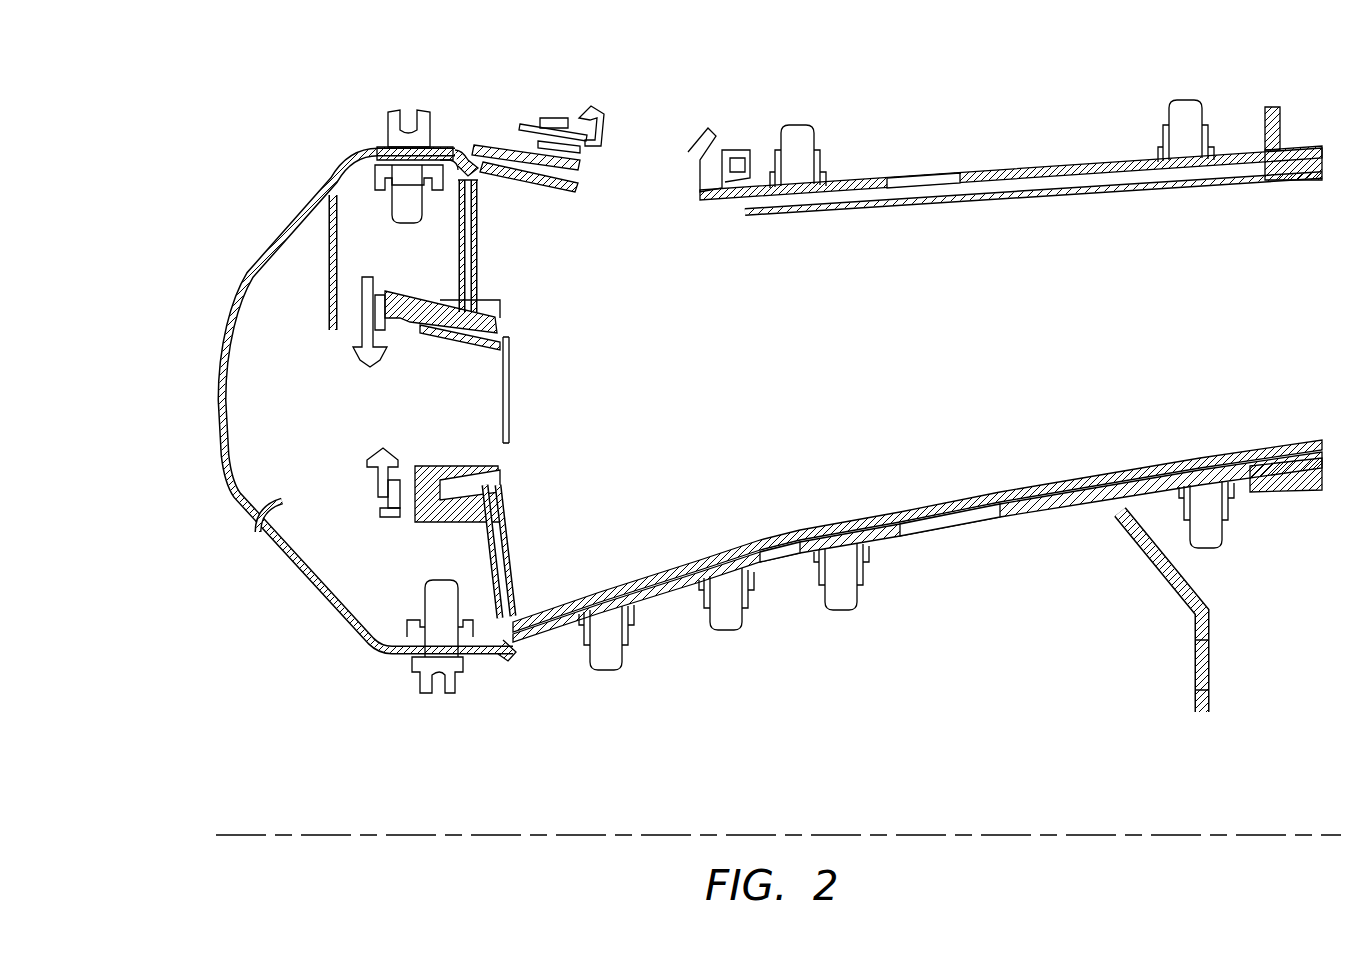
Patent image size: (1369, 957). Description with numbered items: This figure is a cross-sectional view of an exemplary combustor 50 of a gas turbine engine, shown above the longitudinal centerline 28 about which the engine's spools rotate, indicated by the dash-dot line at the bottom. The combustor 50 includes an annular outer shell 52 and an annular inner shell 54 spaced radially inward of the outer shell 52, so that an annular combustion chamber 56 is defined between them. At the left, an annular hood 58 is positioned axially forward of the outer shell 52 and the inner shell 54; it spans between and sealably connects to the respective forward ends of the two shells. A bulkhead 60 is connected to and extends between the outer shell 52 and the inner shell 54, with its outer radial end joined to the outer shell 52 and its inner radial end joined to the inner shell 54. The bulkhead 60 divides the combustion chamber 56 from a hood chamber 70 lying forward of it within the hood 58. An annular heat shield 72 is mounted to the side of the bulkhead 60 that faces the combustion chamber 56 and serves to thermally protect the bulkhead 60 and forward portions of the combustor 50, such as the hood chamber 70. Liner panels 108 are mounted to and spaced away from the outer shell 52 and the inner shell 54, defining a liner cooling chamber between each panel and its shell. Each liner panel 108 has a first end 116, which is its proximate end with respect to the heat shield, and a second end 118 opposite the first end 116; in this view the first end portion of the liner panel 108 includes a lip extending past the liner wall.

The longitudinal centerline 28 is at (1319, 833).
The combustor 50 is at (1005, 120).
The annular outer shell 52 is at (937, 176).
The annular inner shell 54 is at (968, 527).
The annular combustion chamber 56 is at (984, 347).
The annular hood 58 is at (219, 428).
The bulkhead 60 is at (451, 237).
The hood chamber 70 is at (322, 421).
The annular heat shield 72 is at (498, 275).
The liner panel 108 is at (549, 190).
The first end 116 is at (466, 150).
The second end 118 is at (590, 183).